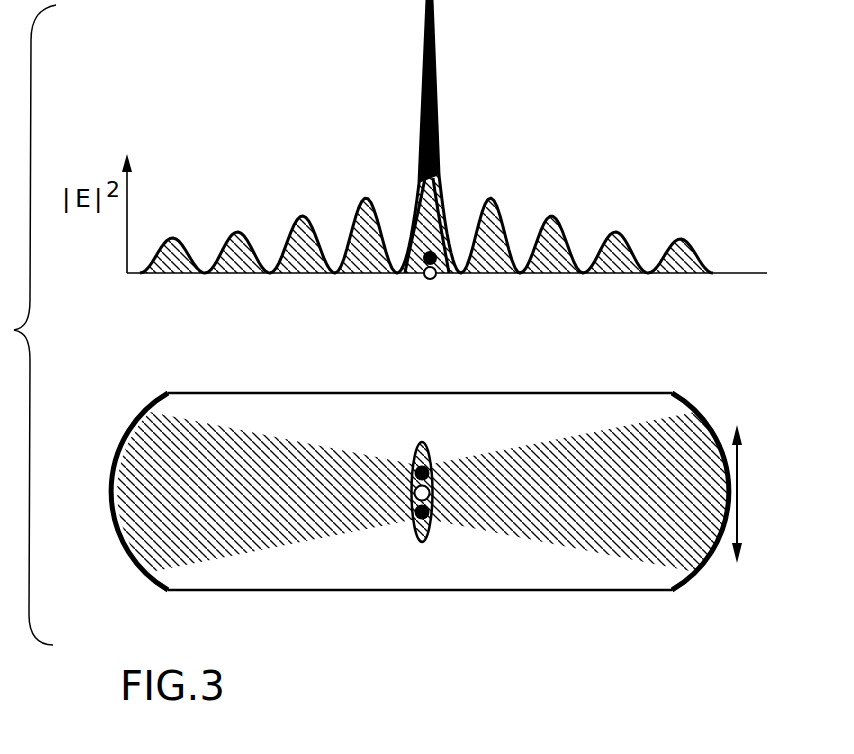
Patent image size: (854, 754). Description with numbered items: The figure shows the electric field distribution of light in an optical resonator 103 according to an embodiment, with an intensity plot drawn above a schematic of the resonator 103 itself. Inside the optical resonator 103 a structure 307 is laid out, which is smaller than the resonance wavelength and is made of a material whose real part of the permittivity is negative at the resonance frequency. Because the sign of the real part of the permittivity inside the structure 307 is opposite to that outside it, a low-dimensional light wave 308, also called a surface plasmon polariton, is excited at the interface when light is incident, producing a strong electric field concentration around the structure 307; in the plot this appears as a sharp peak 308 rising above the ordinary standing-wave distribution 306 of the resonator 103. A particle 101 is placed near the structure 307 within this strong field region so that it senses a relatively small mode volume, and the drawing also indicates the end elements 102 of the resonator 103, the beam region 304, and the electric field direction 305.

The particle 101 is at (385, 276).
The cavity mirror 102 is at (138, 557).
The optical resonator 103 is at (537, 578).
The cavity mode / beam region 304 is at (248, 543).
The electric field direction E 305 is at (742, 530).
The standing wave intensity distribution 306 is at (585, 230).
The structure 307 is at (437, 277).
The low-dimensional light wave 308 is at (433, 40).